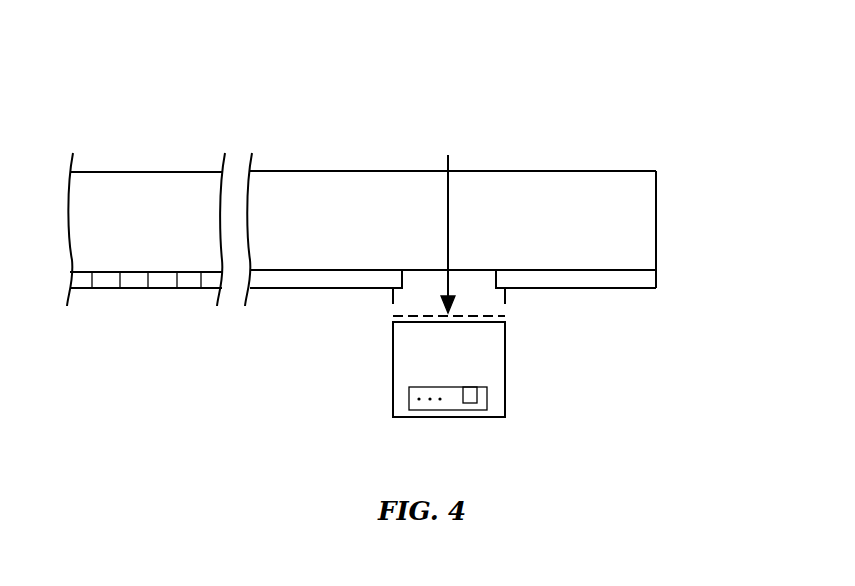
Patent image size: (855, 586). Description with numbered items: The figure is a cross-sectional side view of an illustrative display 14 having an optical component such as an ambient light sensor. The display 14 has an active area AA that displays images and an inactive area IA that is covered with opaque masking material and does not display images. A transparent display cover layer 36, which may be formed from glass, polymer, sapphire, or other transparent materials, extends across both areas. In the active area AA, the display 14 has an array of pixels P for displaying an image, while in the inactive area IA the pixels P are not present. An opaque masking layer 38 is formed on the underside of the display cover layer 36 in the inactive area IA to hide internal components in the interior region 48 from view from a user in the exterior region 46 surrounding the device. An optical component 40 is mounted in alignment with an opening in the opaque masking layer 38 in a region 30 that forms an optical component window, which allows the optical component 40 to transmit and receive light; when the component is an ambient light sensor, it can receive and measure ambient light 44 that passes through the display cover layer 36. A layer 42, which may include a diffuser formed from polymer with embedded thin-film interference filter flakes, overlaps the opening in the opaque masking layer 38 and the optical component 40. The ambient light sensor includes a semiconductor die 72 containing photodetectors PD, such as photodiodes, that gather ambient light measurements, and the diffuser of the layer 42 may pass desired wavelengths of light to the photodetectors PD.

The display 14 is at (616, 55).
The exterior region 46 is at (692, 93).
The region 30 is at (505, 150).
The ambient light 44 is at (448, 215).
The display cover layer 36 is at (656, 221).
The layer 42 is at (505, 303).
The opaque masking layer 38 is at (317, 277).
The optical component 40 is at (500, 372).
The die 72 is at (487, 400).
The interior region 48 is at (302, 369).
The pixels P is at (107, 281).
The photodetectors PD is at (473, 403).
The active area AA is at (222, 96).
The inactive area IA is at (657, 98).